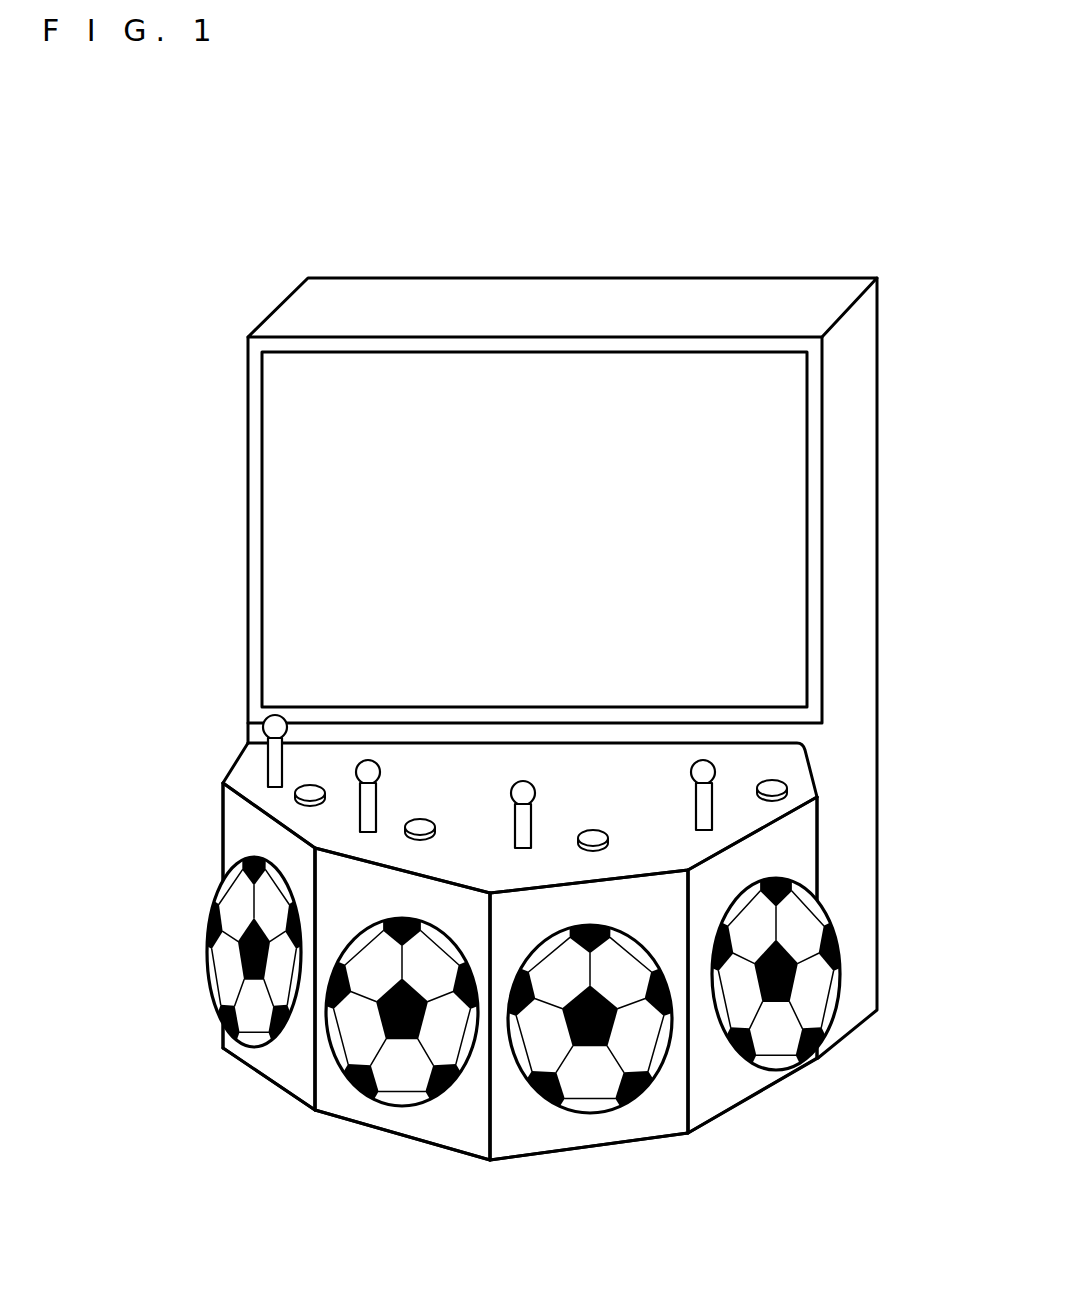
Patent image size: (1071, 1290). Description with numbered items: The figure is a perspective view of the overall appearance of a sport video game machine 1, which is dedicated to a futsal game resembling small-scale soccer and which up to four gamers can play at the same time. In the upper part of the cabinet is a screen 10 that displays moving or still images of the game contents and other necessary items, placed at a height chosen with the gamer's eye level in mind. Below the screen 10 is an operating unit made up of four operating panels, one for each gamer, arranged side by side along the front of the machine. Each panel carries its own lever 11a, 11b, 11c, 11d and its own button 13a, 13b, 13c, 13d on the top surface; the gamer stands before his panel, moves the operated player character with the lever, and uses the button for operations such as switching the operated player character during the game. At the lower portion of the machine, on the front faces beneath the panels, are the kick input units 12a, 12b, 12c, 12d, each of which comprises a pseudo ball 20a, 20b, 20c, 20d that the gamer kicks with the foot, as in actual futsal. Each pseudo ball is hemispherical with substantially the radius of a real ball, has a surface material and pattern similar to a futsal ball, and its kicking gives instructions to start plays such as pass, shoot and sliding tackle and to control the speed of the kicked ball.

The sport video game machine 1 is at (531, 227).
The screen 10 is at (280, 478).
The lever 11a is at (250, 757).
The lever 11b is at (370, 808).
The lever 11c is at (530, 806).
The lever 11d is at (707, 803).
The kick input unit 12a is at (206, 977).
The kick input unit 12b is at (394, 1105).
The kick input unit 12c is at (602, 1104).
The kick input unit 12d is at (792, 1072).
The button 13a is at (295, 797).
The button 13b is at (418, 828).
The button 13c is at (600, 835).
The button 13d is at (782, 784).
The pseudo ball 20a is at (222, 1005).
The pseudo ball 20b is at (435, 1100).
The pseudo ball 20c is at (647, 1098).
The pseudo ball 20d is at (785, 1068).